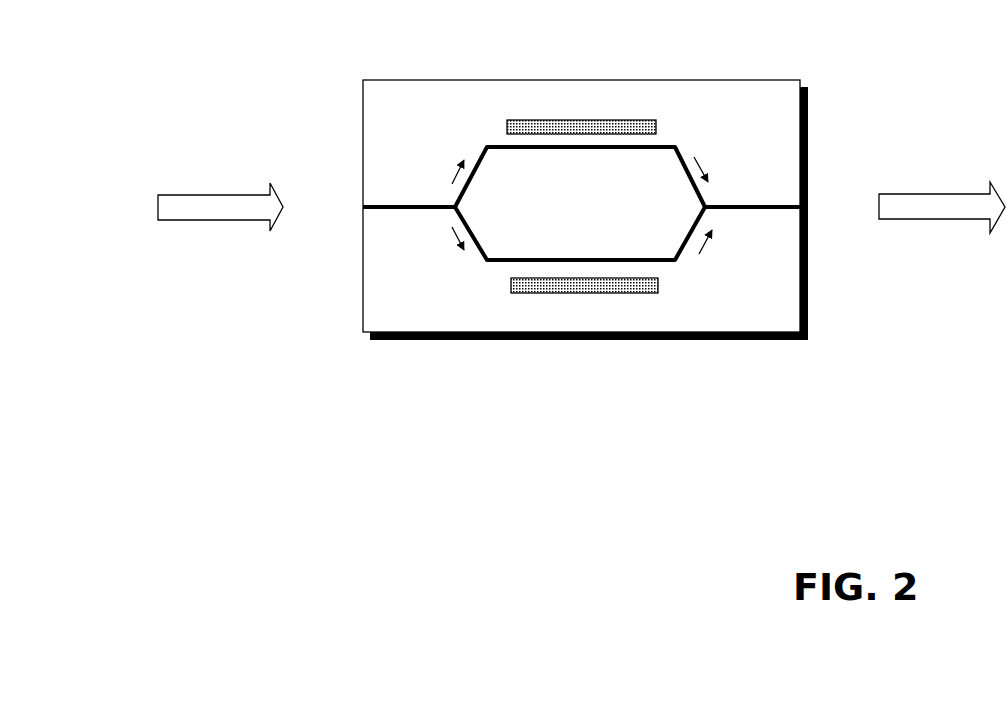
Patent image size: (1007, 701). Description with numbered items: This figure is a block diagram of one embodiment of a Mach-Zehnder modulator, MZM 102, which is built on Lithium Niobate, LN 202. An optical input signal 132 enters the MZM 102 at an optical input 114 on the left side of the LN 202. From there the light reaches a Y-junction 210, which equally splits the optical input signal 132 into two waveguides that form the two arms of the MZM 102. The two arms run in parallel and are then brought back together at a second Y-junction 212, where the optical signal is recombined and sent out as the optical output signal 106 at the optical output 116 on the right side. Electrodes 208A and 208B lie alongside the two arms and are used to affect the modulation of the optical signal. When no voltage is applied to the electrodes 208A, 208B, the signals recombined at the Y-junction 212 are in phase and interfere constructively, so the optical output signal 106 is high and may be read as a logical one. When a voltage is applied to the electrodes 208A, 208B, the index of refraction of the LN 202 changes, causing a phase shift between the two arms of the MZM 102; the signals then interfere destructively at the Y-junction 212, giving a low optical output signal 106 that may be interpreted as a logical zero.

The MZM 102 is at (793, 506).
The optical output signal 106 is at (955, 194).
The optical input 114 is at (363, 207).
The optical output 116 is at (806, 207).
The optical input signal 132 is at (214, 195).
The Lithium Niobate 202 is at (737, 315).
The electrode 208A is at (540, 294).
The electrode 208B is at (577, 119).
The Y-junction 210 is at (459, 207).
The Y-junction 212 is at (701, 207).